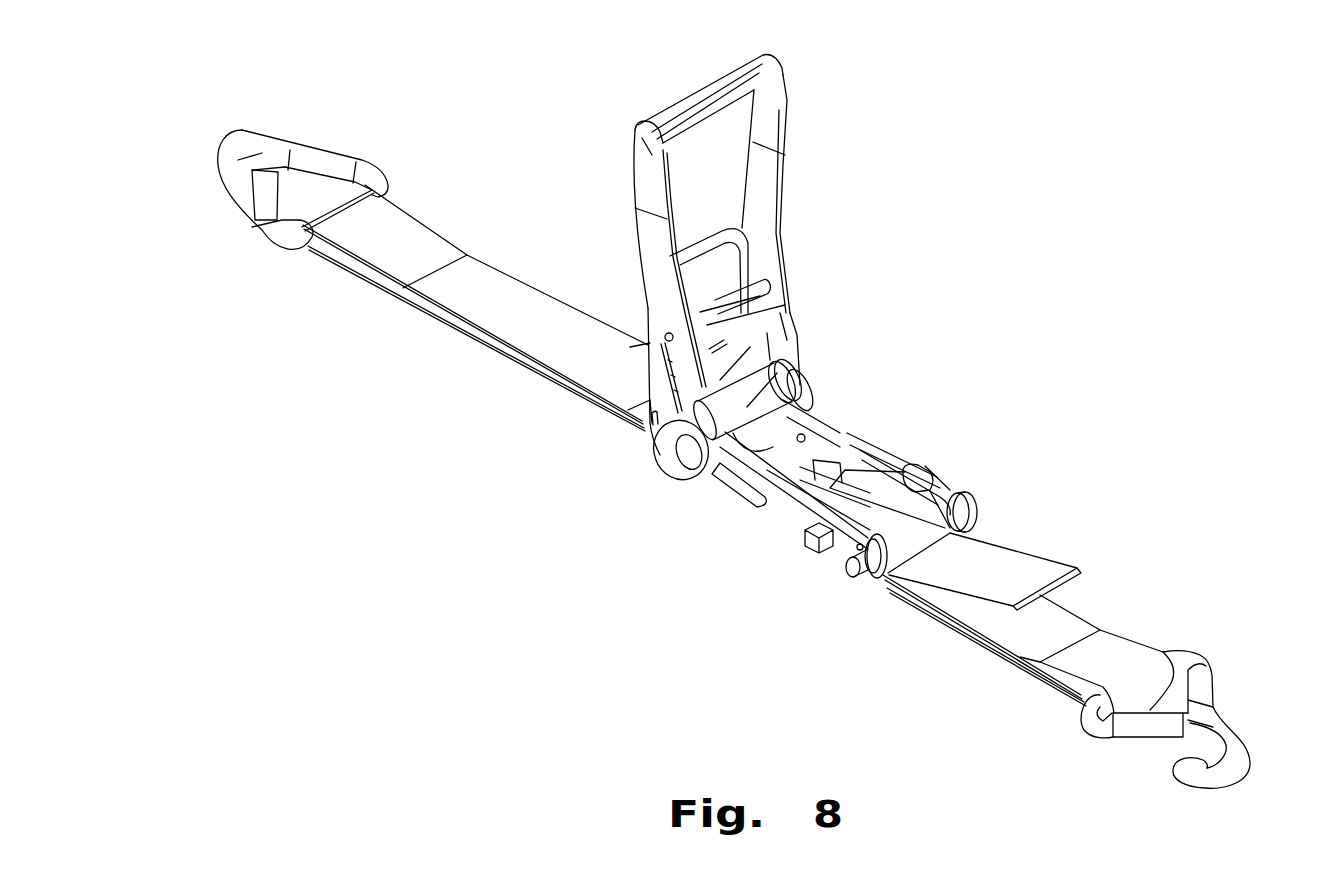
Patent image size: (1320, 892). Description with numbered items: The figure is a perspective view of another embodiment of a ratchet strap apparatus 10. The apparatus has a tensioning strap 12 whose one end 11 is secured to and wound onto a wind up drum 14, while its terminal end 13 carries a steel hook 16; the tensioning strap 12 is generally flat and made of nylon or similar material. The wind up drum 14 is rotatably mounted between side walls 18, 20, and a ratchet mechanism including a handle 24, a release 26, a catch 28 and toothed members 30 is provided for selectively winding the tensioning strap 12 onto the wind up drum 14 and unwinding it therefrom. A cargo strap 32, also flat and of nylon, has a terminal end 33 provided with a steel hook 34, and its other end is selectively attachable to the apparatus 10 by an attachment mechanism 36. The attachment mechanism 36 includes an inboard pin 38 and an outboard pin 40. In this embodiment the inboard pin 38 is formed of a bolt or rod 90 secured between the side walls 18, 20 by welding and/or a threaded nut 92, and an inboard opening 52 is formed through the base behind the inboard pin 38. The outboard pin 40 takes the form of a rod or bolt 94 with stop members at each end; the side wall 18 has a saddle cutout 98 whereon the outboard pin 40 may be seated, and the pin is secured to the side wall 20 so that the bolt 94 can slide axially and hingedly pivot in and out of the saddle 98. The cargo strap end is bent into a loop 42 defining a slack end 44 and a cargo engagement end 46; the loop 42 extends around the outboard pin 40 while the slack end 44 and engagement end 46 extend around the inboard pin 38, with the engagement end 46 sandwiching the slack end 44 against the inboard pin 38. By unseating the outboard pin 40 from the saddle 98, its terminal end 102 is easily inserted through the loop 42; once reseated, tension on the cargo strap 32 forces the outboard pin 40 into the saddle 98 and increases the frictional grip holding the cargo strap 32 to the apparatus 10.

The ratchet strap apparatus 10 is at (908, 290).
The one end of tensioning strap 11 is at (612, 421).
The tensioning strap 12 is at (477, 308).
The terminal end of tensioning strap 13 is at (408, 227).
The wind up drum 14 is at (782, 372).
The steel hook 16 is at (255, 227).
The side wall 18 is at (877, 463).
The side wall 20 is at (780, 503).
The handle 24 is at (700, 98).
The release 26 is at (760, 325).
The catch 28 is at (815, 441).
The toothed members 30 is at (800, 403).
The cargo strap 32 is at (1057, 620).
The terminal end of cargo strap 33 is at (1113, 657).
The steel hook 34 is at (1233, 728).
The attachment mechanism 36 is at (800, 582).
The inboard pin 38 is at (798, 535).
The outboard pin 40 is at (843, 577).
The loop 42 is at (910, 547).
The slack end 44 is at (1016, 556).
The cargo engagement end 46 is at (893, 503).
The inboard opening 52 is at (838, 492).
The bolt or rod 90 is at (803, 547).
The threaded nut 92 is at (913, 470).
The rod or bolt 94 is at (870, 576).
The saddle cutout 98 is at (975, 518).
The terminal end of bolt 102 is at (978, 495).